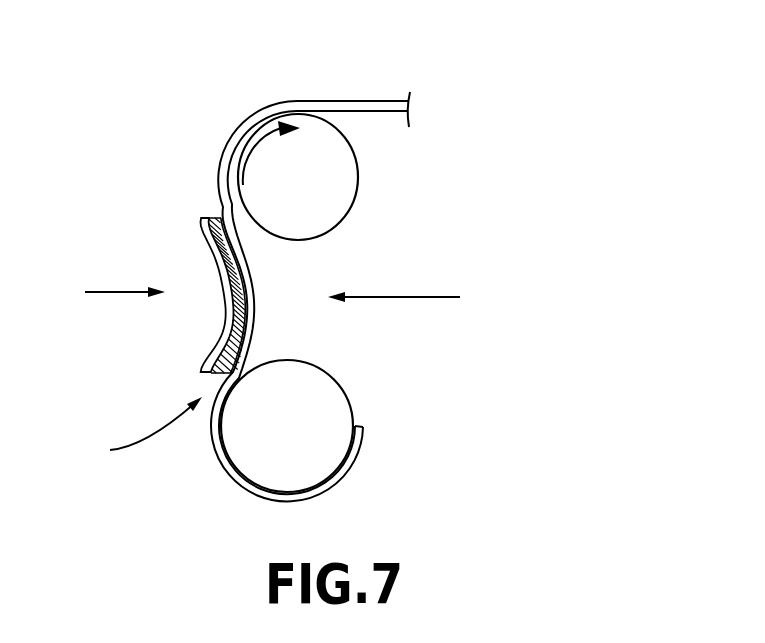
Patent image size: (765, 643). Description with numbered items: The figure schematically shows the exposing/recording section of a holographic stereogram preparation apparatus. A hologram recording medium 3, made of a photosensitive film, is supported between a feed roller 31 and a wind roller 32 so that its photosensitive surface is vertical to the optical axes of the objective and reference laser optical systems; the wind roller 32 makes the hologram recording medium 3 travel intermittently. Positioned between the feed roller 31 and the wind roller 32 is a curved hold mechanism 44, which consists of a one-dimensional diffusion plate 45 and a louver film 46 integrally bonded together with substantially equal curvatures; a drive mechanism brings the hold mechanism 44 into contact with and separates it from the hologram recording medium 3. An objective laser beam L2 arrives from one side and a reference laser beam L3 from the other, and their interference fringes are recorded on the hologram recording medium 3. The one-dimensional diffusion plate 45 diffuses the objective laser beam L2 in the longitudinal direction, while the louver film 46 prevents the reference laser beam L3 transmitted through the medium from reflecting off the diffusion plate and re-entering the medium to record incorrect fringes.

The hologram recording medium 3 is at (368, 104).
The feed roller 31 is at (335, 403).
The wind roller 32 is at (340, 194).
The hold mechanism 44 is at (108, 468).
The one-dimensional diffusion plate 45 is at (203, 230).
The louver film 46 is at (217, 217).
The objective laser beam L2 is at (125, 275).
The reference laser beam L3 is at (394, 278).